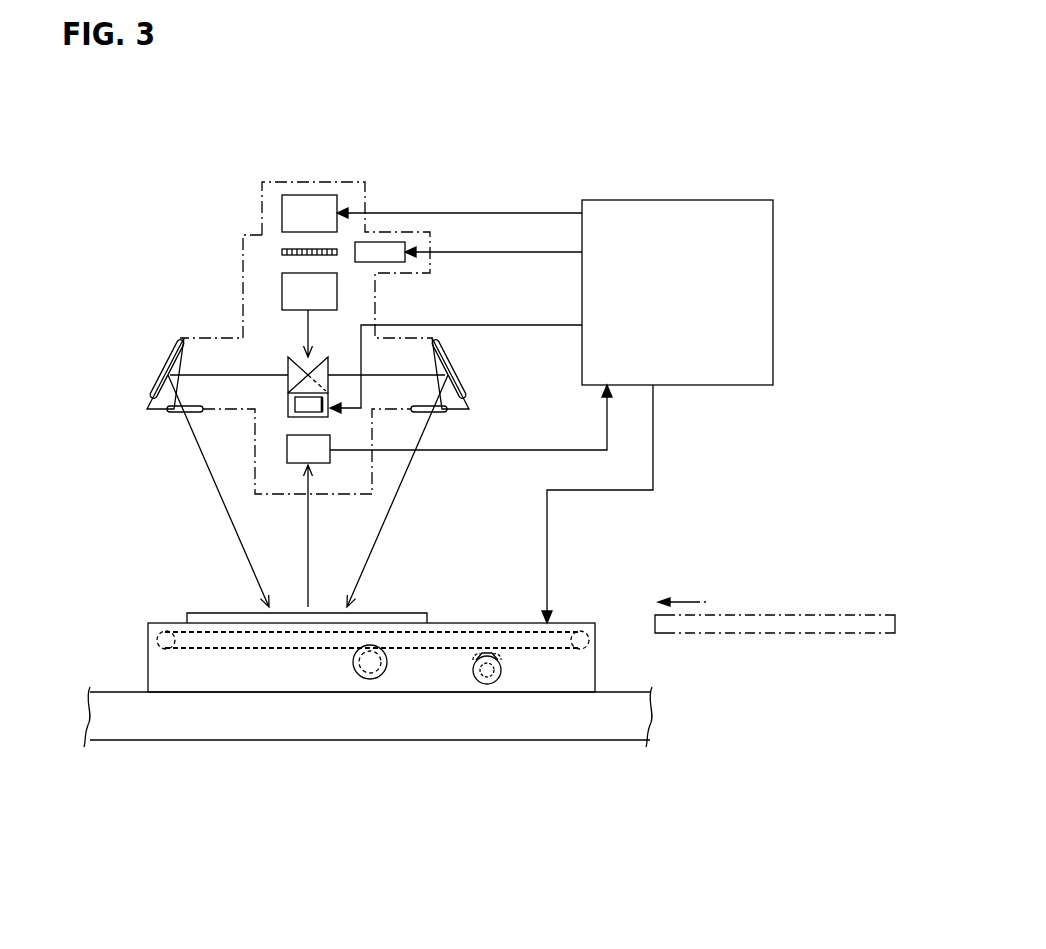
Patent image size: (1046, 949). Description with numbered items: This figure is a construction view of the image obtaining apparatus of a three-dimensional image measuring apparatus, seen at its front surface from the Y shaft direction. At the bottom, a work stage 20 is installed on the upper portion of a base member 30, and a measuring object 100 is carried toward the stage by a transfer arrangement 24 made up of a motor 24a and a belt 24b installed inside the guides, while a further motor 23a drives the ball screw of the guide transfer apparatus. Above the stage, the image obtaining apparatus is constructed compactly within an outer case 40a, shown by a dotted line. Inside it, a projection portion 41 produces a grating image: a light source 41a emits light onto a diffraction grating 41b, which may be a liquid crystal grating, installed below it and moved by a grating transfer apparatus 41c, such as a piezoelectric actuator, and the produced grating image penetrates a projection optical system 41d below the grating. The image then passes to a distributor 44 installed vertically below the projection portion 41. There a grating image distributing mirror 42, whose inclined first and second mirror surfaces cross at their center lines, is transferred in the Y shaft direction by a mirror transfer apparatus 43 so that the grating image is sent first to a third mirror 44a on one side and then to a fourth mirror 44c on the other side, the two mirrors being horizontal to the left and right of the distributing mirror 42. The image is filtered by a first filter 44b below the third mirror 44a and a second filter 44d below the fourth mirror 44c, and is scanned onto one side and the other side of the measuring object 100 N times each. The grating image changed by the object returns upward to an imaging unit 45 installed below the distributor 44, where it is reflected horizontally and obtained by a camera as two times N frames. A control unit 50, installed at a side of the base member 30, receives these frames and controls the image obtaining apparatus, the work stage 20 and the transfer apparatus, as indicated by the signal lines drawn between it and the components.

The work stage 20 is at (135, 652).
The motor 23a is at (368, 680).
The transfer unit 24 is at (373, 734).
The motor 24a is at (530, 648).
The belt 24b is at (476, 684).
The base member 30 is at (235, 723).
The outer case 40a is at (365, 182).
The projection portion 41 is at (165, 185).
The light source 41a is at (282, 201).
The diffraction grating 41b is at (282, 251).
The grating transfer apparatus 41c is at (373, 263).
The projection optical system 41d is at (282, 297).
The grating image distributing mirror 42 is at (288, 367).
The mirror transfer apparatus 43 is at (288, 403).
The distributor 44 is at (62, 313).
The third mirror 44a is at (157, 391).
The first filter 44b is at (172, 412).
The fourth mirror 44c is at (460, 385).
The second filter 44d is at (444, 412).
The imaging unit 45 is at (287, 441).
The control unit 50 is at (773, 313).
The measuring object 100 is at (842, 615).